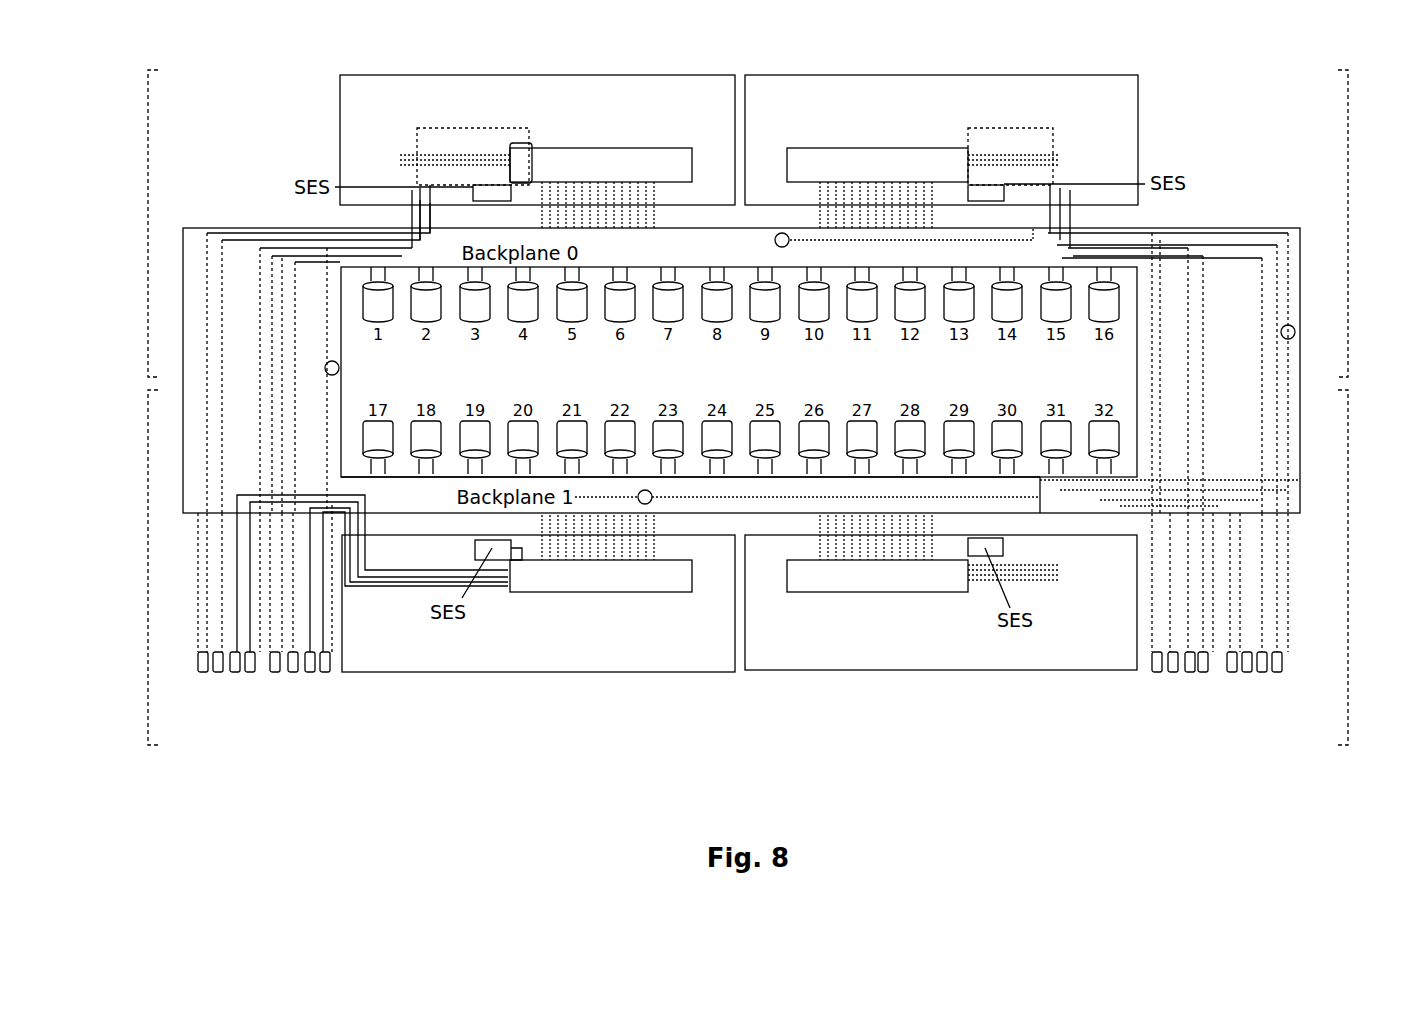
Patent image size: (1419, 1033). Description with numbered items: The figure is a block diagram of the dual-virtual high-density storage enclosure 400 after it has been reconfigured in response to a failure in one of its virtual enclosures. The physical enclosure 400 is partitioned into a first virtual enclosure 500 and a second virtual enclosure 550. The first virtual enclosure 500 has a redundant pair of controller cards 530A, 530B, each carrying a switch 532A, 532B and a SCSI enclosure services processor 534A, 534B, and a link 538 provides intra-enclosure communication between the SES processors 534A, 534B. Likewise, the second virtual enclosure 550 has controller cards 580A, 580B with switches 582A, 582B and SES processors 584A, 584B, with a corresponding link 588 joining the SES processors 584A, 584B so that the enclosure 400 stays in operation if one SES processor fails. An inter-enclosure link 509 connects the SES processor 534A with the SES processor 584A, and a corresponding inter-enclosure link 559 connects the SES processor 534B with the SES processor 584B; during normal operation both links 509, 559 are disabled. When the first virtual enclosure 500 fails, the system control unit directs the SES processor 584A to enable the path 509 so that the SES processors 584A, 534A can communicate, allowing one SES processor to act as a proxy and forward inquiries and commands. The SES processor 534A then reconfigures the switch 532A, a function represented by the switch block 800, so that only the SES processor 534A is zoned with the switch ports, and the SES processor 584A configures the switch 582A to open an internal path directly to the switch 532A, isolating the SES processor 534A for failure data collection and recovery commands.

The storage enclosure 400 is at (1241, 98).
The first virtual enclosure 500 is at (697, 223).
The second virtual enclosure 550 is at (697, 567).
The inter-enclosure link 509 is at (339, 368).
The inter-enclosure link 559 is at (1295, 332).
The controller card 530A is at (537, 140).
The controller card 530B is at (941, 140).
The switch 532A is at (655, 160).
The switch 532B is at (811, 160).
The SES processor 534A is at (490, 193).
The SES processor 534B is at (995, 190).
The link 538 is at (775, 243).
The controller card 580A is at (538, 603).
The controller card 580B is at (941, 603).
The switch 582A is at (607, 585).
The switch 582B is at (878, 588).
The SES processor 584A is at (488, 544).
The SES processor 584B is at (983, 545).
The link 588 is at (652, 495).
The switch block 800 is at (527, 143).